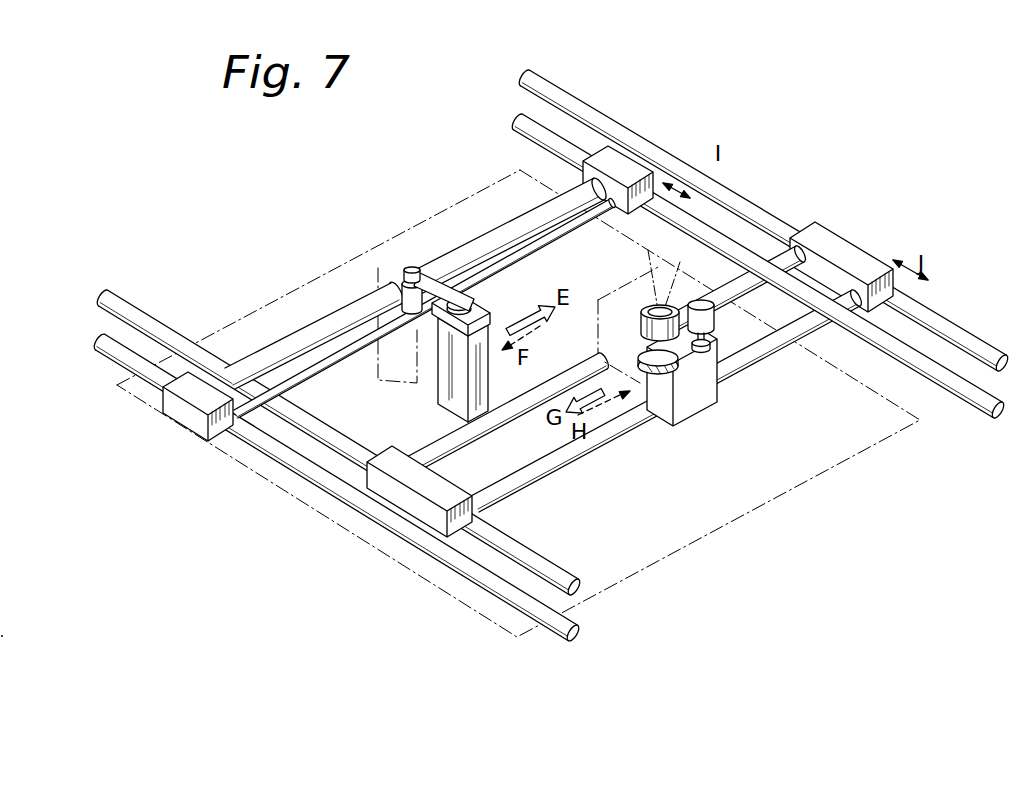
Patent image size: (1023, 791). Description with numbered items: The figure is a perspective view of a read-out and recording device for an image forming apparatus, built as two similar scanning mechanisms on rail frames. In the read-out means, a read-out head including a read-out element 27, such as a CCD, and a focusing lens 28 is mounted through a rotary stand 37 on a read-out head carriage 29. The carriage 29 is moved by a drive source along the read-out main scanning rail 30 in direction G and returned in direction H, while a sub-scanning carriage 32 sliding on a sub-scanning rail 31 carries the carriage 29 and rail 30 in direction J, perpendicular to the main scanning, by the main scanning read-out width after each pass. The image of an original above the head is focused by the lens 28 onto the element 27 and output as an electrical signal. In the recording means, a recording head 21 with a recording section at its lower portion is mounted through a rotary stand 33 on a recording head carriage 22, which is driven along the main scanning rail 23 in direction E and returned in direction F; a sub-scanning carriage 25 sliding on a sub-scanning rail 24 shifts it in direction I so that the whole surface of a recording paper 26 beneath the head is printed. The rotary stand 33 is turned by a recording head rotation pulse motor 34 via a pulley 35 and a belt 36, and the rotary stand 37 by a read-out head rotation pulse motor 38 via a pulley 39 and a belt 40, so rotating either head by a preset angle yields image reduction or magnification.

The recording head 21 is at (437, 397).
The recording head carriage 22 is at (375, 370).
The main scanning rail 23 is at (282, 337).
The sub-scanning rail 24 is at (516, 122).
The sub-scanning carriage 25 is at (630, 160).
The recording paper 26 is at (330, 275).
The read-out element 27 is at (650, 385).
The lens 28 is at (648, 300).
The read-out head carriage 29 is at (717, 402).
The main scanning rail 30 is at (541, 470).
The guide rod 31 is at (970, 334).
The sub-scanning carriage 32 is at (845, 240).
The rotary stand 33 is at (489, 296).
The recording head rotation pulse motor 34 is at (408, 280).
The pulley 35 is at (413, 268).
The belt 36 is at (438, 283).
The rotary stand 37 is at (637, 355).
The read-out head rotation pulse motor 38 is at (698, 303).
The pulley 39 is at (743, 360).
The belt 40 is at (723, 372).